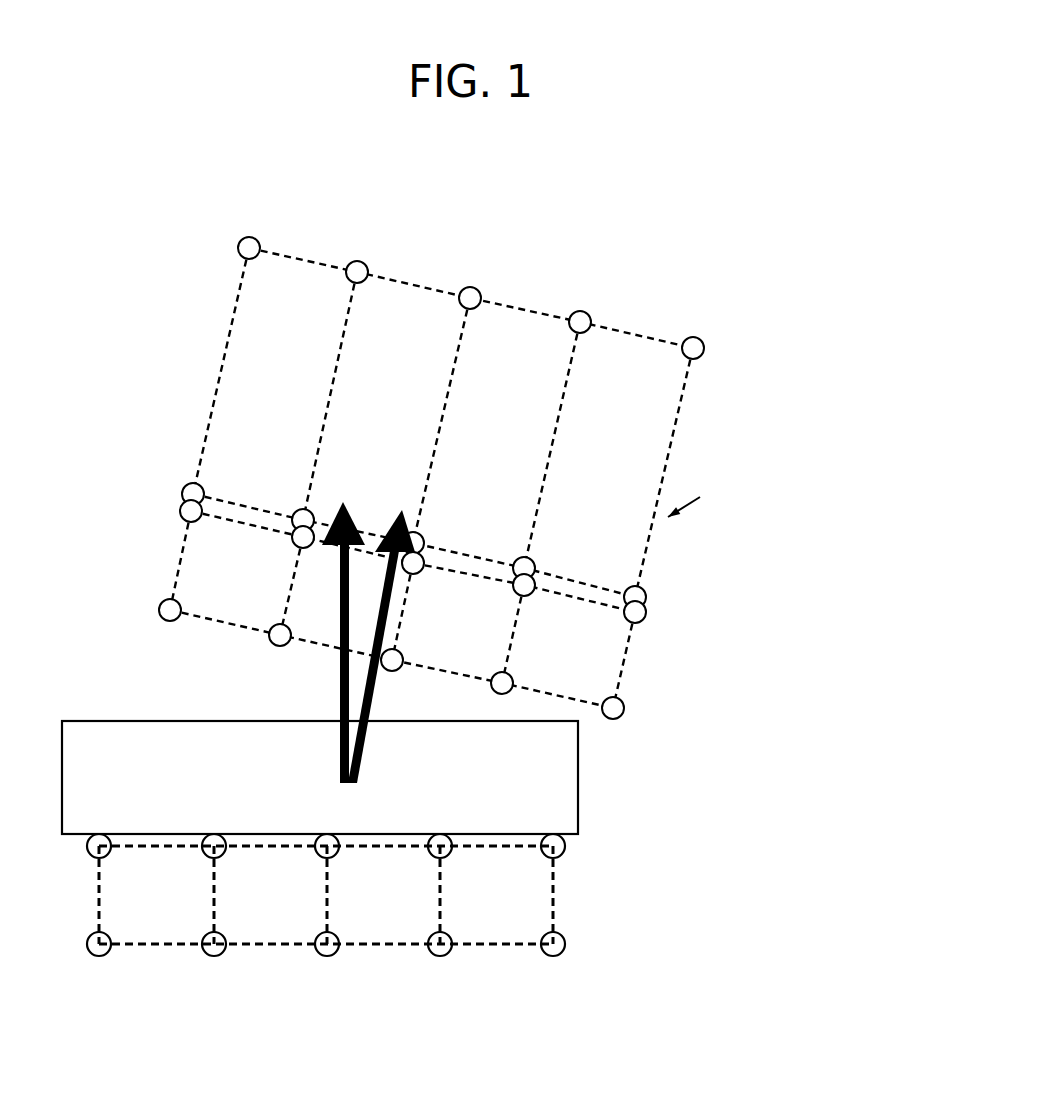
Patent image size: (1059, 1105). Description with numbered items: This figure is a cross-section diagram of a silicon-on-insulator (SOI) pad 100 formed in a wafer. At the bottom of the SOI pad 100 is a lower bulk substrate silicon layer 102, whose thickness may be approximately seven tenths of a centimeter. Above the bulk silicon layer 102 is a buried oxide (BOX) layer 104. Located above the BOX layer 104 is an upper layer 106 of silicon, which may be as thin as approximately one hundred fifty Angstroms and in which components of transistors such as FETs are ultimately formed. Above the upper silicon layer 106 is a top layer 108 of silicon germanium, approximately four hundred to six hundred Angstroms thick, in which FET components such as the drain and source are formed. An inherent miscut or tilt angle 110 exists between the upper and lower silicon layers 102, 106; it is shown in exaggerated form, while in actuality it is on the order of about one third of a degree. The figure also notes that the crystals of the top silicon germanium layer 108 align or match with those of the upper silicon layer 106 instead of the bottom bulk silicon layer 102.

The silicon-on-insulator (SOI) pad 100 is at (479, 562).
The lower bulk substrate silicon layer 102 is at (485, 927).
The buried oxide (BOX) layer 104 is at (568, 755).
The upper layer of silicon 106 is at (197, 585).
The top layer of silicon germanium 108 is at (512, 319).
The miscut or tilt angle 110 is at (242, 642).